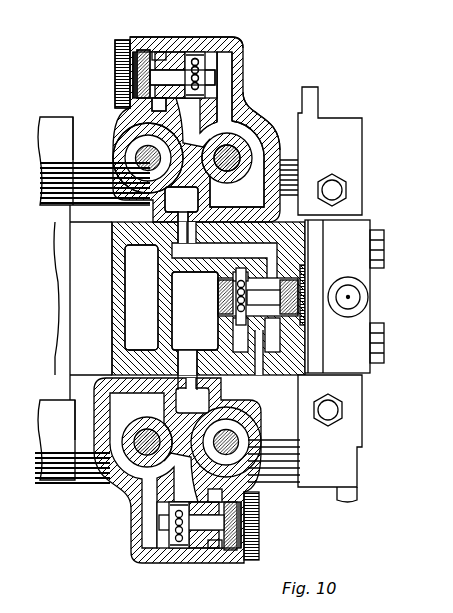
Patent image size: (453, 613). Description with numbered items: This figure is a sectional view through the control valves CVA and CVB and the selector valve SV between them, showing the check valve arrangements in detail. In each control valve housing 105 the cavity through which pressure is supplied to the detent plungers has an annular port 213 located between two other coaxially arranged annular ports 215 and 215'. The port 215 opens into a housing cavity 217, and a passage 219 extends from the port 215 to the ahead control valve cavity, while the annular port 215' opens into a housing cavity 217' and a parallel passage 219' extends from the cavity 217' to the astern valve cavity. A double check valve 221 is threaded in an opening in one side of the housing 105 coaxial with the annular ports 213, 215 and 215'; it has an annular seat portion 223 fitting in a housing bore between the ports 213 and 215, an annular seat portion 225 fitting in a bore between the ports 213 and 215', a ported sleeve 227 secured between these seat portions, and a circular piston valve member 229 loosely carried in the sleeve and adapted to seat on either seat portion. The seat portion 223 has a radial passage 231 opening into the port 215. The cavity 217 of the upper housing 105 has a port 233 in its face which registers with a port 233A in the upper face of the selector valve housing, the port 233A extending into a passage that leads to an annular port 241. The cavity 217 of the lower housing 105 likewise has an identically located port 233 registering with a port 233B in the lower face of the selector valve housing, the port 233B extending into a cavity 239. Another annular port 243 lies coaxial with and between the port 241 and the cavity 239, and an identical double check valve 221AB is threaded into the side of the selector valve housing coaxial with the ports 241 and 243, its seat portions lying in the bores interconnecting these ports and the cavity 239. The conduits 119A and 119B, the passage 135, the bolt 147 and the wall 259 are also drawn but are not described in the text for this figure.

The control valve housing 105 is at (290, 152).
The conduit 119A is at (312, 106).
The conduit 119B is at (348, 483).
The passage 135 is at (180, 253).
The bolt 147 is at (367, 290).
The annular port 213 is at (206, 48).
The annular port 215 is at (166, 302).
The annular port 215' is at (202, 297).
The housing cavity 217 is at (190, 280).
The housing cavity 217' is at (189, 295).
The passage 219 is at (192, 309).
The passage 219' is at (187, 297).
The double check valve 221 is at (112, 78).
The end cap 221AB is at (361, 295).
The annular seat portion 223 is at (182, 50).
The annular seat portion 225 is at (213, 63).
The ported sleeve 227 is at (224, 50).
The circular piston valve member 229 is at (137, 60).
The radial passage 231 is at (133, 88).
The port 233 is at (208, 183).
The port 233A is at (172, 232).
The port 233B is at (220, 400).
The cavity 239 is at (170, 313).
The annular port 241 is at (277, 251).
The annular port 243 is at (237, 337).
The wall 259 is at (123, 338).
The selector valve SV is at (75, 299).
The control valve CVA is at (88, 156).
The control valve CVB is at (85, 440).